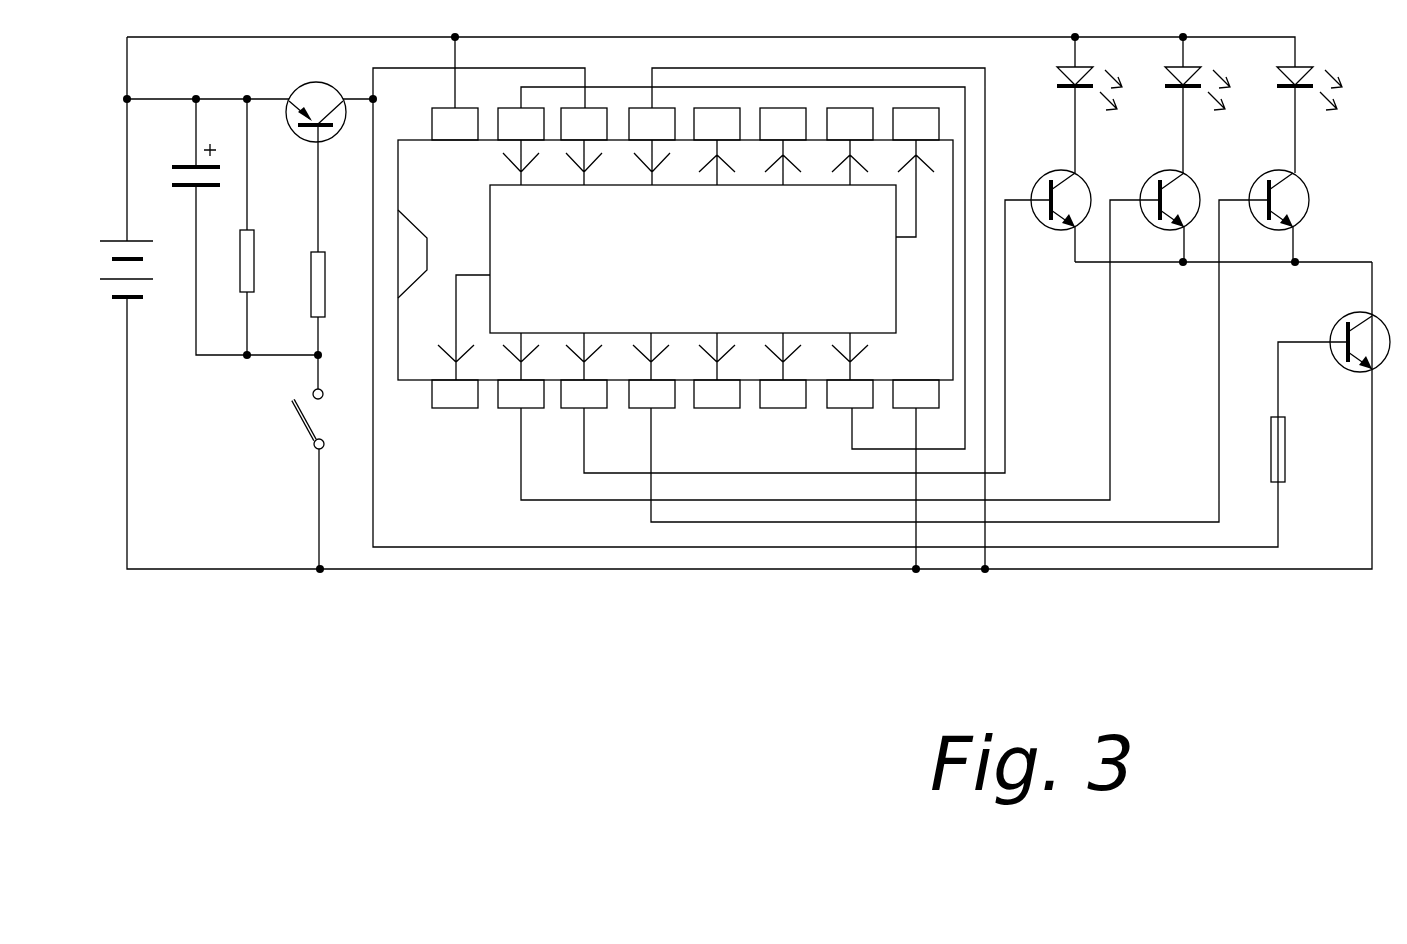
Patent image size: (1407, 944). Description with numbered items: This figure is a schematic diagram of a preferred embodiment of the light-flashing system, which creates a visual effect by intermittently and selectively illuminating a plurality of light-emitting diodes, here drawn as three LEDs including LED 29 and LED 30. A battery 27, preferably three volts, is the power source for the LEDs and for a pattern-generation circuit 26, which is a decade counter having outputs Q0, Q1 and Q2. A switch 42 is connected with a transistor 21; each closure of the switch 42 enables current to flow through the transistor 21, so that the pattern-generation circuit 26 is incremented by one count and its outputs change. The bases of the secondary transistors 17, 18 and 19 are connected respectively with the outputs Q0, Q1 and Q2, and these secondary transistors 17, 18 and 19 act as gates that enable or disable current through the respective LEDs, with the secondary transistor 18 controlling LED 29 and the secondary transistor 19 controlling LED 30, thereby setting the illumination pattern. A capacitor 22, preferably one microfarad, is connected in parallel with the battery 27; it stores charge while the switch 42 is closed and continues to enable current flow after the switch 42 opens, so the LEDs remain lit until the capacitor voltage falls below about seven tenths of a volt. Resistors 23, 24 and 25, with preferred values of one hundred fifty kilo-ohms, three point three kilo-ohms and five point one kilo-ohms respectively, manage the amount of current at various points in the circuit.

The secondary transistor 17 is at (1048, 178).
The secondary transistor 18 is at (1157, 178).
The secondary transistor 19 is at (1267, 180).
The transistor 21 is at (310, 84).
The capacitor 22 is at (180, 159).
The resistor 23 is at (256, 236).
The resistor 24 is at (310, 306).
The resistor 25 is at (1285, 462).
The pattern-generation circuit 26 is at (454, 410).
The battery 27 is at (116, 242).
The light-emitting diode 29 is at (1178, 64).
The light-emitting diode 30 is at (1290, 64).
The switch 42 is at (290, 430).